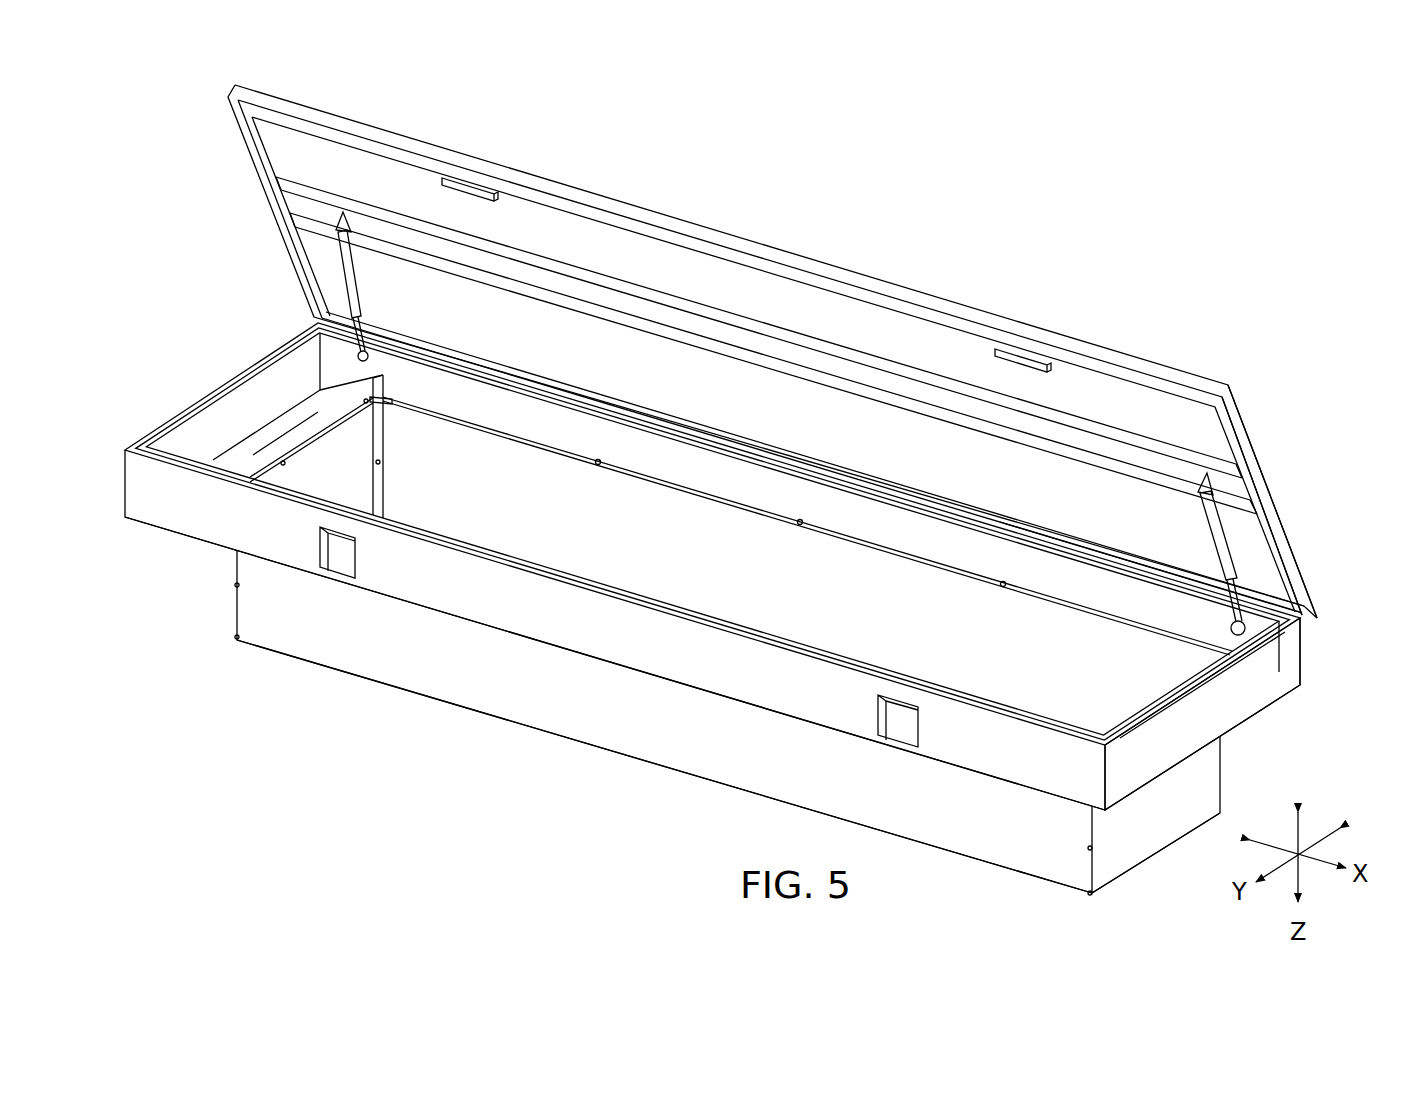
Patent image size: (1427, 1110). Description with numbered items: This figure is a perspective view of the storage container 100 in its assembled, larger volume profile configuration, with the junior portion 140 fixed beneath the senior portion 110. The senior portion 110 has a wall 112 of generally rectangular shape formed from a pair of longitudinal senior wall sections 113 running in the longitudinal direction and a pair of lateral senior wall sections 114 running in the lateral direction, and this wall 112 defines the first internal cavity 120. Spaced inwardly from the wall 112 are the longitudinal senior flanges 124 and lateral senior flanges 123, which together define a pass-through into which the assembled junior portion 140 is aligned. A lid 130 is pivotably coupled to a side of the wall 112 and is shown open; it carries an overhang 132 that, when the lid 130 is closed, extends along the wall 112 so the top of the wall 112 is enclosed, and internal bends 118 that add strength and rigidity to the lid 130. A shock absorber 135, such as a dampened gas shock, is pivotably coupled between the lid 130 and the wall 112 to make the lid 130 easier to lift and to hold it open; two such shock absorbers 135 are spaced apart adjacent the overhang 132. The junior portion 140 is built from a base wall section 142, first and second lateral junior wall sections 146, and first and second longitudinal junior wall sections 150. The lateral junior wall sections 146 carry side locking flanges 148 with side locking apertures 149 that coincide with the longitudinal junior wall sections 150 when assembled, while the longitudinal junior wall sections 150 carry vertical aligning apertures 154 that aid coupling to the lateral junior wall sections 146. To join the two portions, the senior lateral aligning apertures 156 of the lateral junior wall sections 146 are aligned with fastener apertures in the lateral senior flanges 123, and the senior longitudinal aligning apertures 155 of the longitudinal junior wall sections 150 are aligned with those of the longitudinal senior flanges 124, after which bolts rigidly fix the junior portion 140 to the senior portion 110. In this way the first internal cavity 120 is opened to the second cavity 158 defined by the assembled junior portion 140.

The storage container 100 is at (1139, 160).
The senior portion 110 is at (1086, 315).
The wall 112 is at (1312, 660).
The longitudinal senior wall sections 113 is at (318, 342).
The lateral senior wall sections 114 is at (1207, 730).
The internal bends 118 is at (1152, 445).
The first internal cavity 120 is at (1136, 628).
The lateral senior flanges 123 is at (318, 415).
The longitudinal senior flanges 124 is at (548, 443).
The lid 130 is at (1270, 457).
The overhang 132 is at (1232, 405).
The shock absorber 135 is at (355, 283).
The junior portion 140 is at (1153, 868).
The base wall section 142 is at (658, 765).
The lateral junior wall sections 146 is at (1233, 792).
The side locking flanges 148 is at (385, 432).
The side locking apertures 149 is at (380, 400).
The longitudinal junior wall sections 150 is at (428, 705).
The vertical aligning apertures 154 is at (234, 586).
The senior longitudinal aligning apertures 155 is at (598, 466).
The senior lateral aligning apertures 156 is at (370, 414).
The second cavity 158 is at (1150, 683).